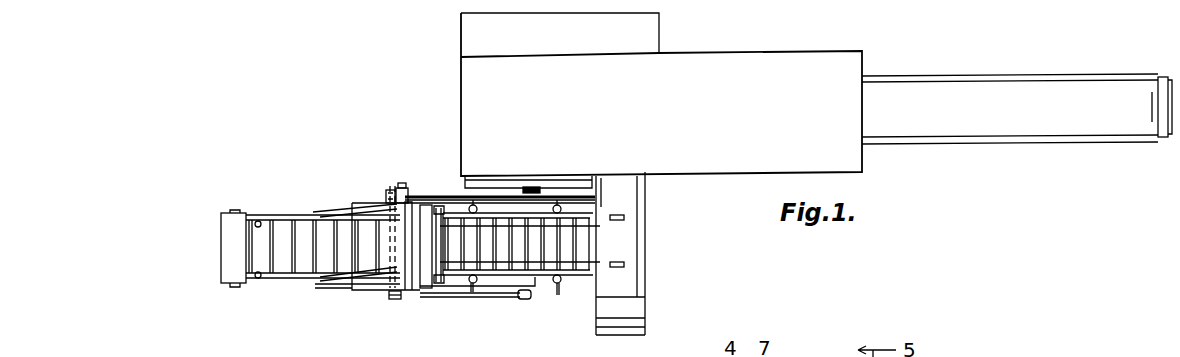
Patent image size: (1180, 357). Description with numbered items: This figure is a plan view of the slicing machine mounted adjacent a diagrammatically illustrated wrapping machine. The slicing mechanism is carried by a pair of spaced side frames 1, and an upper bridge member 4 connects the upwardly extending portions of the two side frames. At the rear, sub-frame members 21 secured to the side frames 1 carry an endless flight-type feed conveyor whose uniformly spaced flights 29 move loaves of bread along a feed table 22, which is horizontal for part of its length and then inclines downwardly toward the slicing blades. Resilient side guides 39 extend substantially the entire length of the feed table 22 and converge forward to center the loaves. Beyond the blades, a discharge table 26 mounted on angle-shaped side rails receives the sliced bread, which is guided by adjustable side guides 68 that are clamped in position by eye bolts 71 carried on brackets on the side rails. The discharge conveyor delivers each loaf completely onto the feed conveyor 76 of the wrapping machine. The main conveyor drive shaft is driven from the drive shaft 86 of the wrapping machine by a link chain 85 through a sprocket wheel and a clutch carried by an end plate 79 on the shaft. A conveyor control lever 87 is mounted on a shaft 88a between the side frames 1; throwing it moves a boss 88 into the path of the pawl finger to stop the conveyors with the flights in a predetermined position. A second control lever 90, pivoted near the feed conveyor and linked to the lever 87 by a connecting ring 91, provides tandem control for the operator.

The side frames 1 is at (372, 291).
The upper bridge member 4 is at (423, 237).
The sub-frame members 21 is at (333, 286).
The feed table 22 is at (286, 263).
The discharge table 26 is at (505, 237).
The flights 29 is at (318, 243).
The side guides 39 is at (260, 276).
The side guides 68 is at (573, 258).
The eye bolts 71 is at (559, 210).
The feed conveyor of the wrapping machine 76 is at (622, 219).
The end plate 79 is at (399, 188).
The link chain 85 is at (434, 197).
The drive shaft of the wrapping machine 86 is at (541, 190).
The conveyor control lever 87 is at (527, 300).
The boss 88 is at (388, 192).
The shaft 88a is at (388, 238).
The second control lever 90 is at (393, 300).
The connecting ring 91 is at (508, 299).